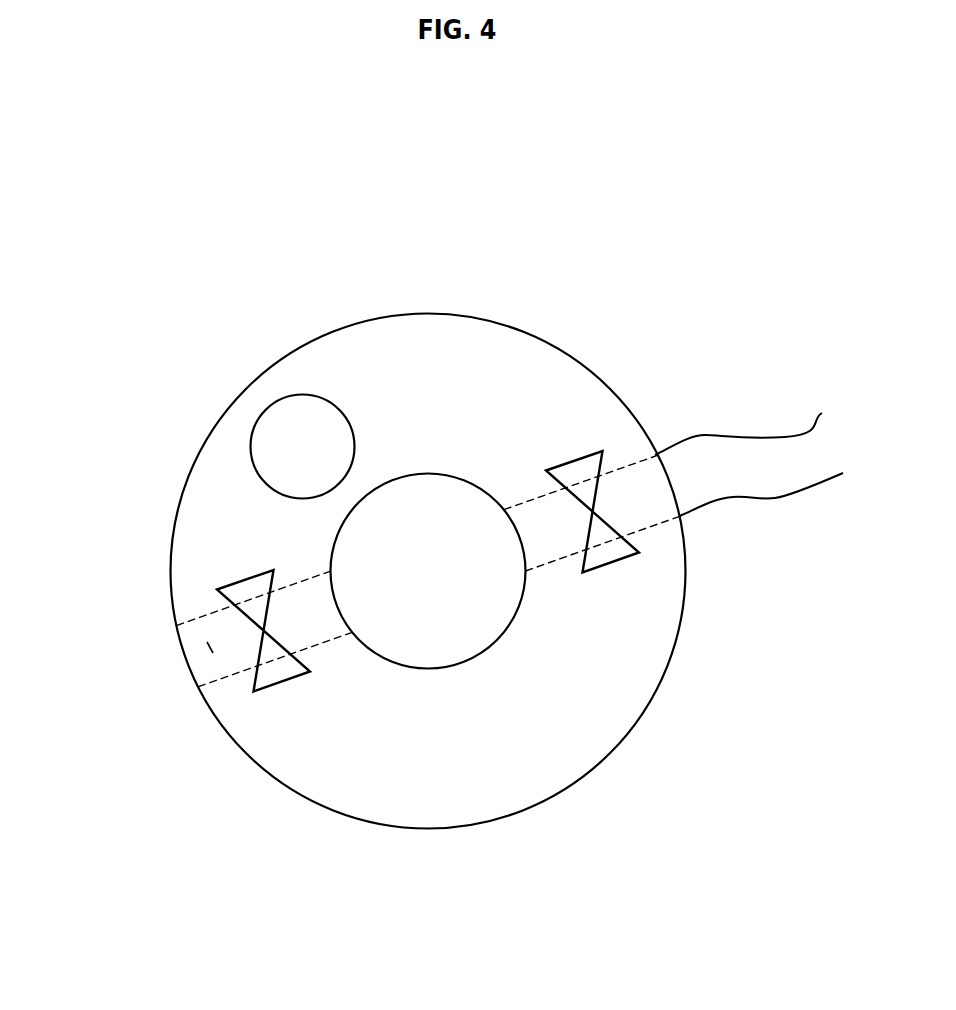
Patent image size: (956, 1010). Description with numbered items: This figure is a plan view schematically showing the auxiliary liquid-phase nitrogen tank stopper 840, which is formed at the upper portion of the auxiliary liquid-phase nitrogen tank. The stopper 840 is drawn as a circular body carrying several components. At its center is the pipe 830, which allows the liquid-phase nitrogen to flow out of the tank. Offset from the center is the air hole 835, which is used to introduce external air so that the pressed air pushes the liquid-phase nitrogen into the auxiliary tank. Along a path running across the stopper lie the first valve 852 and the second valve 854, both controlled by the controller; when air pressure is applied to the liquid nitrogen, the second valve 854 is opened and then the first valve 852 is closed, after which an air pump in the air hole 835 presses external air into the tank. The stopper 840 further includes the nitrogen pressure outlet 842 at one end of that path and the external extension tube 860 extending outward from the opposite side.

The pipe 830 is at (452, 613).
The air hole 835 is at (300, 437).
The auxiliary liquid-phase nitrogen tank stopper 840 is at (498, 357).
The nitrogen pressure outlet 842 is at (207, 652).
The first valve 852 is at (282, 687).
The second valve 854 is at (612, 567).
The external extension tube 860 is at (751, 442).